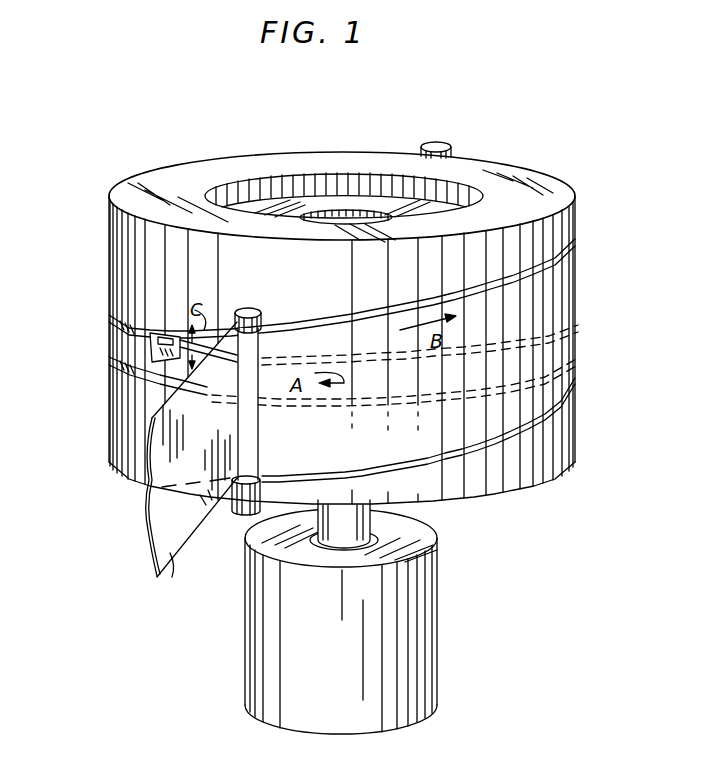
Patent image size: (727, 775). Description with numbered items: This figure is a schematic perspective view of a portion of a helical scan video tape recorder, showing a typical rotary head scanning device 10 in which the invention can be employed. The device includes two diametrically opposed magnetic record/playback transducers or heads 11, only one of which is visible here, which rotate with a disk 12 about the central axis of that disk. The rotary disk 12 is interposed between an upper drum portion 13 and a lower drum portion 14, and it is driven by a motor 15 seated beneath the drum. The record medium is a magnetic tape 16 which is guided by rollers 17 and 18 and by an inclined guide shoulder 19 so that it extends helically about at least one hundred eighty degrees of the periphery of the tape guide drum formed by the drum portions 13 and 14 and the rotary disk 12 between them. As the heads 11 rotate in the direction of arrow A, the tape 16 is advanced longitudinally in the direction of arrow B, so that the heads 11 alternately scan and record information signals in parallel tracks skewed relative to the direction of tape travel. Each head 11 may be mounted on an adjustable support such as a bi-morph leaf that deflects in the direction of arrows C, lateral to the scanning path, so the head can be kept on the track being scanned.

The rotary head scanning device 10 is at (312, 313).
The magnetic record/playback transducer or head 11 is at (150, 348).
The disk 12 is at (110, 319).
The upper drum portion 13 is at (130, 265).
The lower drum portion 14 is at (110, 412).
The motor 15 is at (246, 663).
The magnetic tape 16 is at (174, 578).
The roller 17 is at (241, 306).
The roller 18 is at (431, 142).
The inclined guide shoulder 19 is at (578, 376).